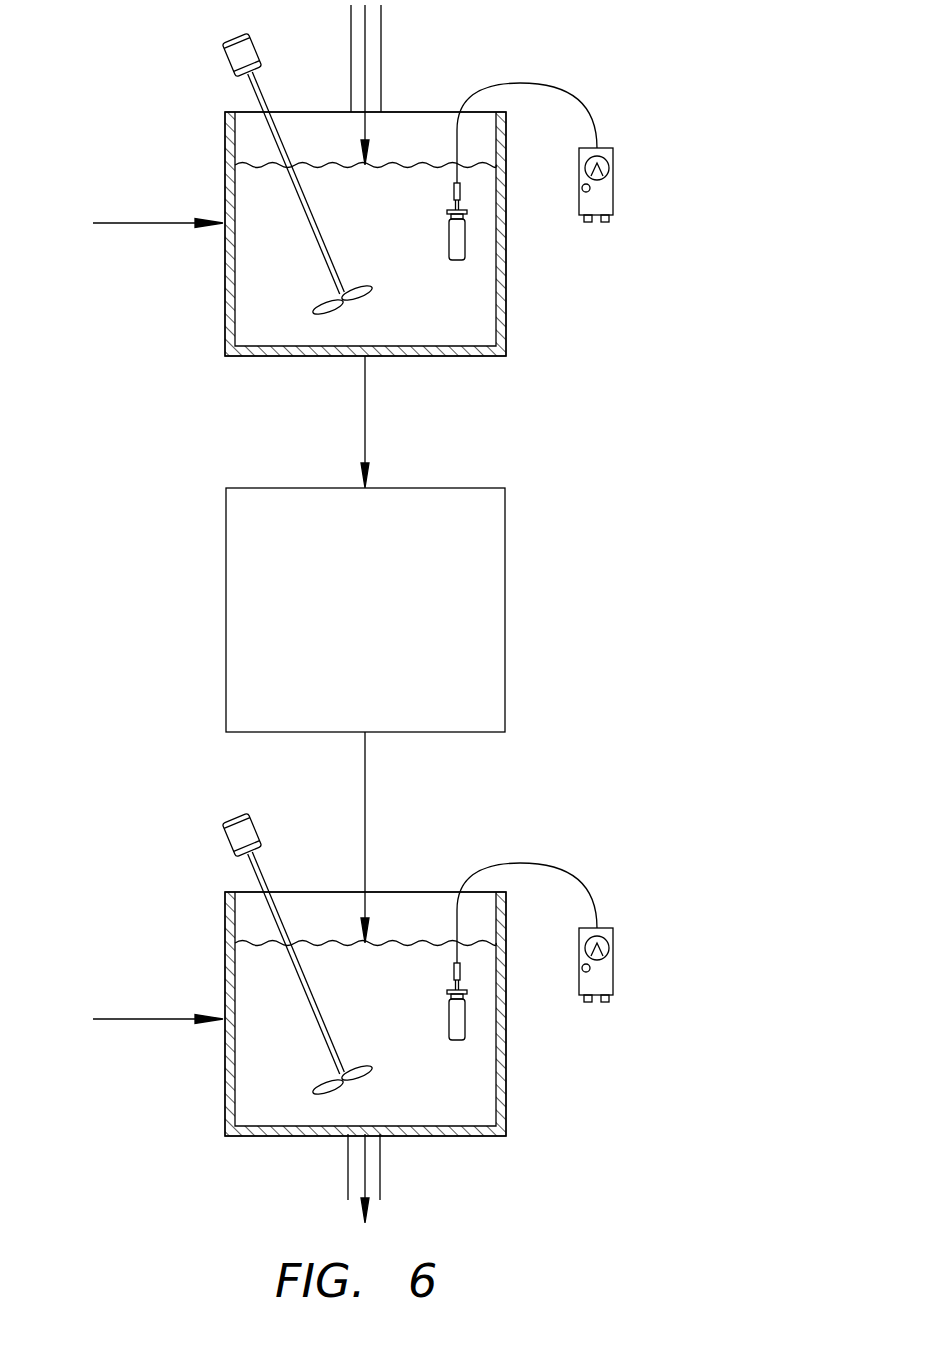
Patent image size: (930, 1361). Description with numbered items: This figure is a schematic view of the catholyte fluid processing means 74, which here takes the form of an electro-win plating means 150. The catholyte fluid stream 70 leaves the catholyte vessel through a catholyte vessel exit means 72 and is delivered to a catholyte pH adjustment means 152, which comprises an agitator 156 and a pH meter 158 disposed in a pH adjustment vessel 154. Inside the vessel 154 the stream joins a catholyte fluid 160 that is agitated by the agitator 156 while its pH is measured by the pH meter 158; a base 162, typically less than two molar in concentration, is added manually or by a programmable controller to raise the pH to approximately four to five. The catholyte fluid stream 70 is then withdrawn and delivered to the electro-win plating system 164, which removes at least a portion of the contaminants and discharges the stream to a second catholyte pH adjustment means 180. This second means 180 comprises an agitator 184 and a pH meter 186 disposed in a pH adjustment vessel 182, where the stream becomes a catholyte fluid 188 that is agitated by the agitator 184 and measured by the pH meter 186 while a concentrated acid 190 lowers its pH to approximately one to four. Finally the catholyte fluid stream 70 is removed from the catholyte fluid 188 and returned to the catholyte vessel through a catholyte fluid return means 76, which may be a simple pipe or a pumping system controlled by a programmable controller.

The catholyte fluid stream 70 is at (366, 62).
The catholyte vessel exit means 72 is at (350, 58).
The catholyte fluid processing means 74 is at (685, 26).
The electro-win plating means 150 is at (753, 40).
The catholyte pH adjustment means 152 is at (524, 250).
The pH adjustment vessel 154 is at (507, 298).
The agitator 156 is at (250, 85).
The pH meter 158 is at (613, 178).
The catholyte fluid 160 is at (372, 163).
The base 162 is at (166, 223).
The electro-win plating system 164 is at (505, 568).
The catholyte pH adjustment means 180 is at (422, 1014).
The pH adjustment vessel 182 is at (412, 1014).
The agitator 184 is at (261, 955).
The pH meter 186 is at (642, 963).
The catholyte fluid 188 is at (484, 951).
The acid 190 is at (158, 995).
The catholyte fluid return means 76 is at (347, 1192).